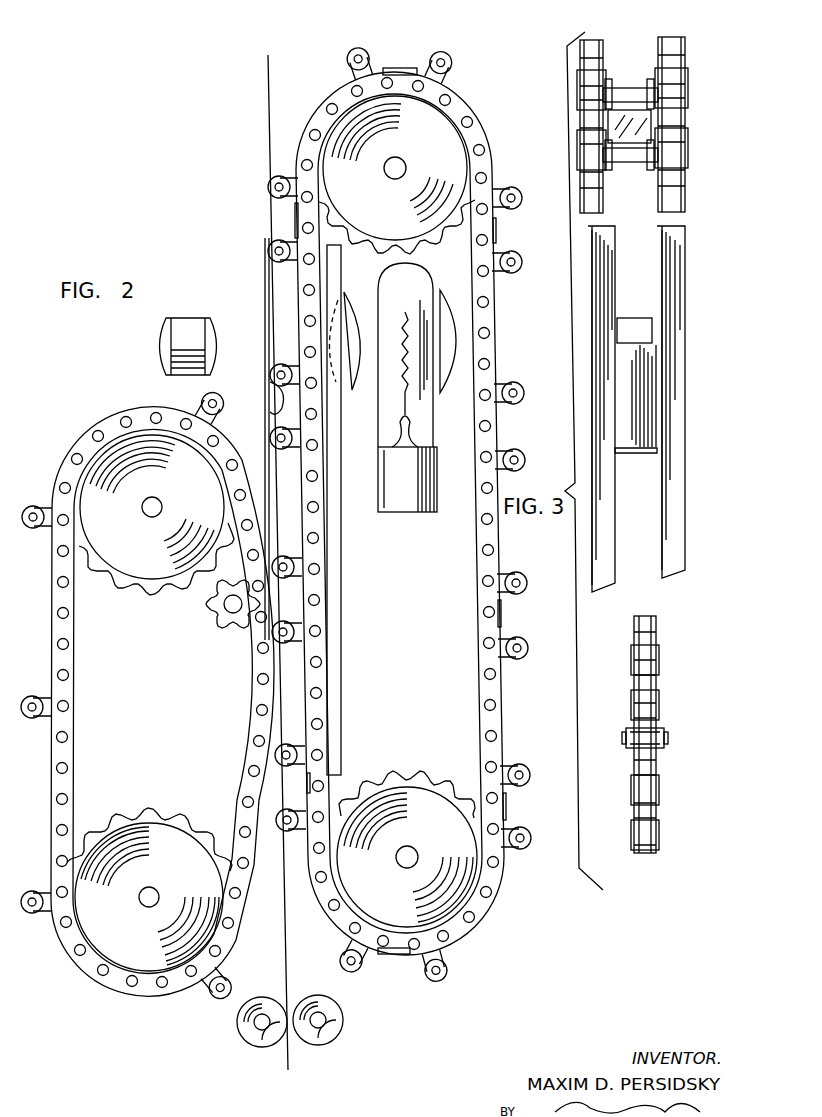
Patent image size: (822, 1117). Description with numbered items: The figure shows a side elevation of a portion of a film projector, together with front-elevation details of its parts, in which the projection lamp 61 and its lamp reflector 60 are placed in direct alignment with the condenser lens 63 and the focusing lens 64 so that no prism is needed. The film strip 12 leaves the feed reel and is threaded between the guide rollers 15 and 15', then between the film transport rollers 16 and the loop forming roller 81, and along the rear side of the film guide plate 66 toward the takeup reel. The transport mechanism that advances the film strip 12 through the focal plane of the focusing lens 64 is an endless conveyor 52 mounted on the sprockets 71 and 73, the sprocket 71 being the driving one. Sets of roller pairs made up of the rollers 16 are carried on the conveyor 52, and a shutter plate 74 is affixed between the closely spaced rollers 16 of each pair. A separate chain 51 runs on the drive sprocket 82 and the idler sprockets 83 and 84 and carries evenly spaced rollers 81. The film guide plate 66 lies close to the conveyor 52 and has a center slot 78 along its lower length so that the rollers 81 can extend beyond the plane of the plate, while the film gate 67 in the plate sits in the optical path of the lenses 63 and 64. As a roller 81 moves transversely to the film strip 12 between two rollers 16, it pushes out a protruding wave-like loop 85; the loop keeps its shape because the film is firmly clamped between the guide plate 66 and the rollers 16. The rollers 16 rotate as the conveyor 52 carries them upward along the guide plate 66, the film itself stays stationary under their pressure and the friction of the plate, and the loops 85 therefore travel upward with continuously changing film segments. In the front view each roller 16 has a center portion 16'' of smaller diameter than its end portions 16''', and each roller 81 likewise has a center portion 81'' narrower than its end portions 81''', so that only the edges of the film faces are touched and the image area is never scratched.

In FIG. 2, the film strip 12 is at (271, 88).
In FIG. 2, the guide roller 15 is at (335, 1020).
In FIG. 2, the guide roller 15' is at (249, 1034).
In FIG. 2, the film transport roller 16 is at (399, 518).
In FIG. 3, the center portion of roller 16 16'' is at (630, 170).
In FIG. 3, the end portion of roller 16 16''' is at (630, 79).
In FIG. 2, the chain 51 is at (74, 703).
In FIG. 3, the chain 51 is at (657, 632).
In FIG. 2, the endless conveyor 52 is at (478, 553).
In FIG. 3, the endless conveyor 52 is at (601, 46).
In FIG. 2, the lamp reflector 60 is at (455, 390).
In FIG. 2, the projection lamp 61 is at (408, 513).
In FIG. 2, the condenser lens 63 is at (351, 318).
In FIG. 2, the focusing lens 64 is at (186, 320).
In FIG. 2, the film guide plate 66 is at (266, 243).
In FIG. 3, the film guide plate 66 is at (645, 375).
In FIG. 3, the film gate 67 is at (640, 330).
In FIG. 2, the sprocket 71 is at (417, 795).
In FIG. 2, the sprocket 73 is at (440, 238).
In FIG. 2, the shutter plate 74 is at (397, 958).
In FIG. 3, the shutter plate 74 is at (651, 128).
In FIG. 3, the center slot 78 is at (652, 517).
In FIG. 2, the loop forming roller 81 is at (140, 696).
In FIG. 3, the loop forming roller 81 is at (609, 754).
In FIG. 3, the center portion of roller 81 81'' is at (668, 725).
In FIG. 3, the end portion of roller 81 81''' is at (691, 752).
In FIG. 2, the drive sprocket 82 is at (154, 826).
In FIG. 2, the idler sprocket 83 is at (152, 583).
In FIG. 2, the idler sprocket 84 is at (222, 627).
In FIG. 2, the film loop 85 is at (278, 402).